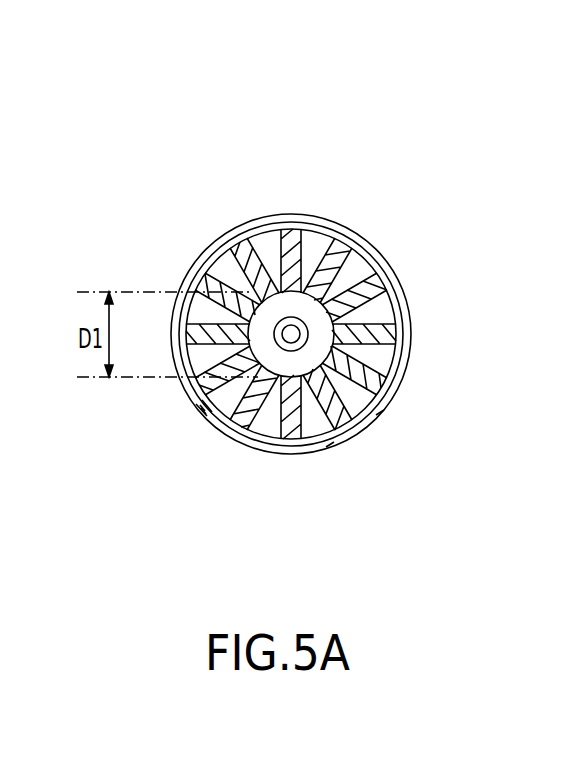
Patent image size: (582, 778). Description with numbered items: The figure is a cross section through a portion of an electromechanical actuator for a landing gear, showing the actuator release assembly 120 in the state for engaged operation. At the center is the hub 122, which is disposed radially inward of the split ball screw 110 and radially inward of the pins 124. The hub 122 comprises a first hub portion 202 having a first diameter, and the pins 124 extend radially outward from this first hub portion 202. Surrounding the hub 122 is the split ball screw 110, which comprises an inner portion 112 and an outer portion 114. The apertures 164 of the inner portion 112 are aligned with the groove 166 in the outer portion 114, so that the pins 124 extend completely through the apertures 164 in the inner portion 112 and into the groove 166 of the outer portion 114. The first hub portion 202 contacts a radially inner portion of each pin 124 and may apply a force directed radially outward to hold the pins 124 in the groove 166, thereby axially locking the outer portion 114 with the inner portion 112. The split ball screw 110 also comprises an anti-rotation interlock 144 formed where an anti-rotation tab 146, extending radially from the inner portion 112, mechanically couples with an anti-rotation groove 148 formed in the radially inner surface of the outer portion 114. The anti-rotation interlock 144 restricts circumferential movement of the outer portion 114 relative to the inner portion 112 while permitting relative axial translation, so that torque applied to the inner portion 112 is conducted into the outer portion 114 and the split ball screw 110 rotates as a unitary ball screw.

The actuator release assembly 120 is at (162, 105).
The split ball screw 110 is at (510, 282).
The inner portion 112 is at (380, 360).
The outer portion 114 is at (410, 320).
The hub 122 is at (273, 320).
The pins 124 is at (341, 253).
The first hub portion 202 is at (292, 280).
The anti-rotation interlock 144 is at (193, 503).
The anti-rotation tab 146 is at (203, 410).
The anti-rotation groove 148 is at (202, 408).
The apertures 164 is at (380, 413).
The groove 166 is at (330, 445).